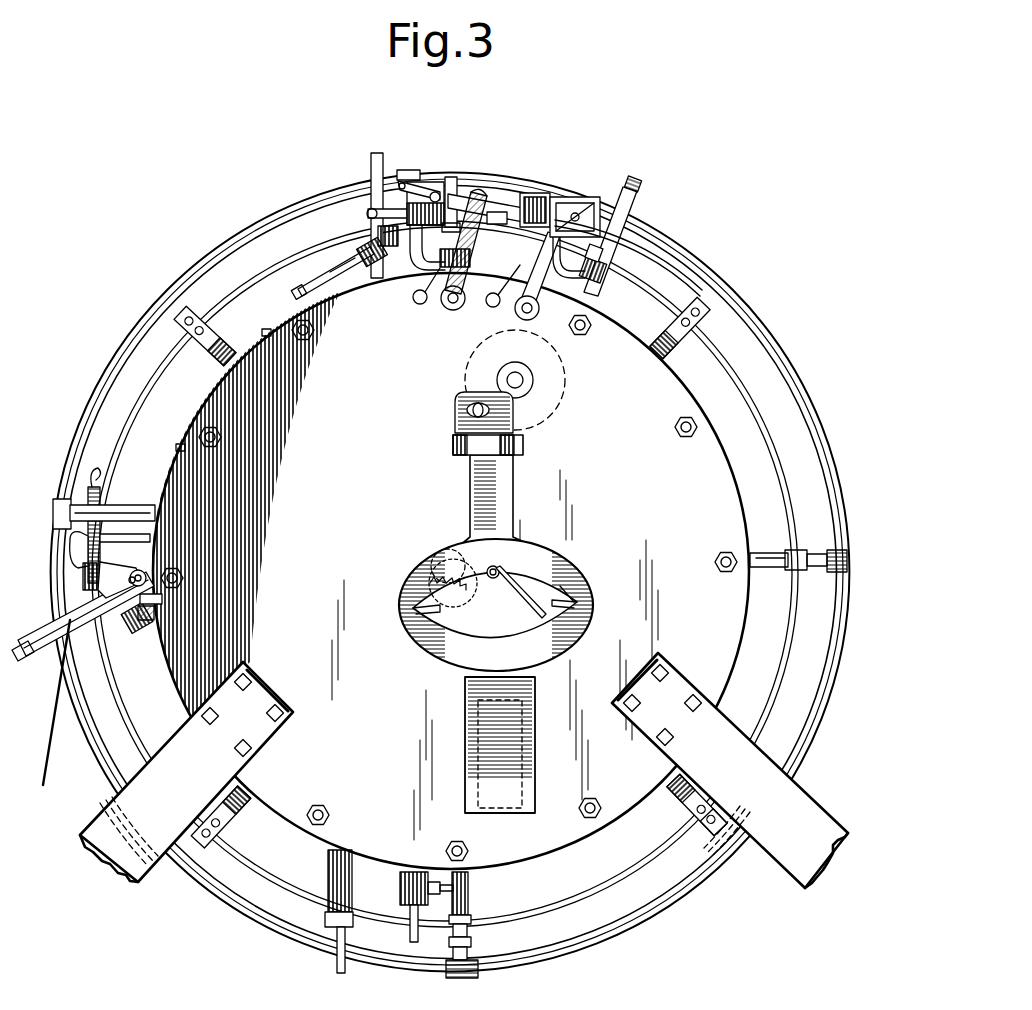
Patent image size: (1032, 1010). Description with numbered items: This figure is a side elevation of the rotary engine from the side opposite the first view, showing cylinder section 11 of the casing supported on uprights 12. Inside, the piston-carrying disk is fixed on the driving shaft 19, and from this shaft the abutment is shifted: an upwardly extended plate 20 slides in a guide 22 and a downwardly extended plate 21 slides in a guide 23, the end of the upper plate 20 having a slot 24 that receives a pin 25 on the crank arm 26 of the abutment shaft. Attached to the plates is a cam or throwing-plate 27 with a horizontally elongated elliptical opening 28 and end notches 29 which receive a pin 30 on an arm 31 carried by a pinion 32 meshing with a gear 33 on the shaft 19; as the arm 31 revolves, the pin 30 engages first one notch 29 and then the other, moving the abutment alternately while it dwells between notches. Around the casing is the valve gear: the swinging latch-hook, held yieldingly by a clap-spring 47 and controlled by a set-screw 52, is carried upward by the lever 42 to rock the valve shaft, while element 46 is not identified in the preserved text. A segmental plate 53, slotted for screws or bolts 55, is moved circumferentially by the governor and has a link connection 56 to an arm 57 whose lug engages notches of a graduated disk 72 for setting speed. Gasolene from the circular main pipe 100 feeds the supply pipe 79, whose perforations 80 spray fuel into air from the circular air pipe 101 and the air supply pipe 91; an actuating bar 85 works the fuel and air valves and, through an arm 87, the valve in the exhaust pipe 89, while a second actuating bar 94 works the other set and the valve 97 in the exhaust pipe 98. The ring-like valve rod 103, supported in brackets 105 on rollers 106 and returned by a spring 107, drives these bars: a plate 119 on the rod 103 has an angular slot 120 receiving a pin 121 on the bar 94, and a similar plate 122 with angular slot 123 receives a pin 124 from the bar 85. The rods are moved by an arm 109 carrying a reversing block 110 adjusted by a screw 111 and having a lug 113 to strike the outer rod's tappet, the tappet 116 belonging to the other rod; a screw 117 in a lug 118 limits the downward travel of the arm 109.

The cylinder section 11 is at (450, 571).
The uprights 12 is at (815, 825).
The driving shaft 19 is at (430, 570).
The upwardly extended plate 20 is at (514, 508).
The downwardly extended plate 21 is at (465, 680).
The guide 22 is at (524, 444).
The guide 23 is at (478, 795).
The slot 24 is at (466, 410).
The pin 25 is at (500, 402).
The crank arm 26 is at (495, 381).
The cam or throwing-plate 27 is at (552, 560).
The elliptical opening 28 is at (565, 588).
The notches 29 is at (412, 608).
The pin 30 is at (540, 616).
The arm 31 is at (518, 600).
The pinion 32 is at (489, 582).
The gear 33 is at (432, 552).
The lever 42 is at (70, 545).
The link 46 is at (83, 576).
The clap-spring 47 is at (152, 516).
The set-screw 52 is at (150, 540).
The segmental plate 53 is at (182, 413).
The screws or bolts 55 is at (266, 330).
The link connection 56 is at (326, 288).
The arm 57 is at (376, 262).
The graduated disk 72 is at (356, 272).
The gasolene supply pipe 79 is at (475, 244).
The side perforations 80 is at (447, 306).
The actuating bar 85 is at (630, 232).
The arm 87 is at (606, 268).
The exhaust pipe 89 is at (640, 184).
The air supply pipe 91 is at (494, 296).
The actuating bar 94 is at (478, 198).
The valve 97 is at (413, 272).
The exhaust pipe 98 is at (377, 153).
The main pipe 100 is at (262, 910).
The air supply pipe 101 is at (205, 895).
The valve rod 103 is at (690, 318).
The brackets 105 is at (682, 800).
The rollers 106 is at (708, 825).
The spring 107 is at (86, 490).
The arm 109 is at (40, 636).
The reversing block 110 is at (110, 598).
The screw 111 is at (22, 656).
The lug 113 is at (124, 612).
The tappet 116 is at (168, 604).
The screw 117 is at (160, 600).
The lug 118 is at (154, 614).
The plate 119 is at (368, 213).
The angular slot 120 is at (430, 192).
The pin 121 is at (452, 180).
The plate 122 is at (545, 195).
The angular slot 123 is at (578, 200).
The pin 124 is at (626, 178).